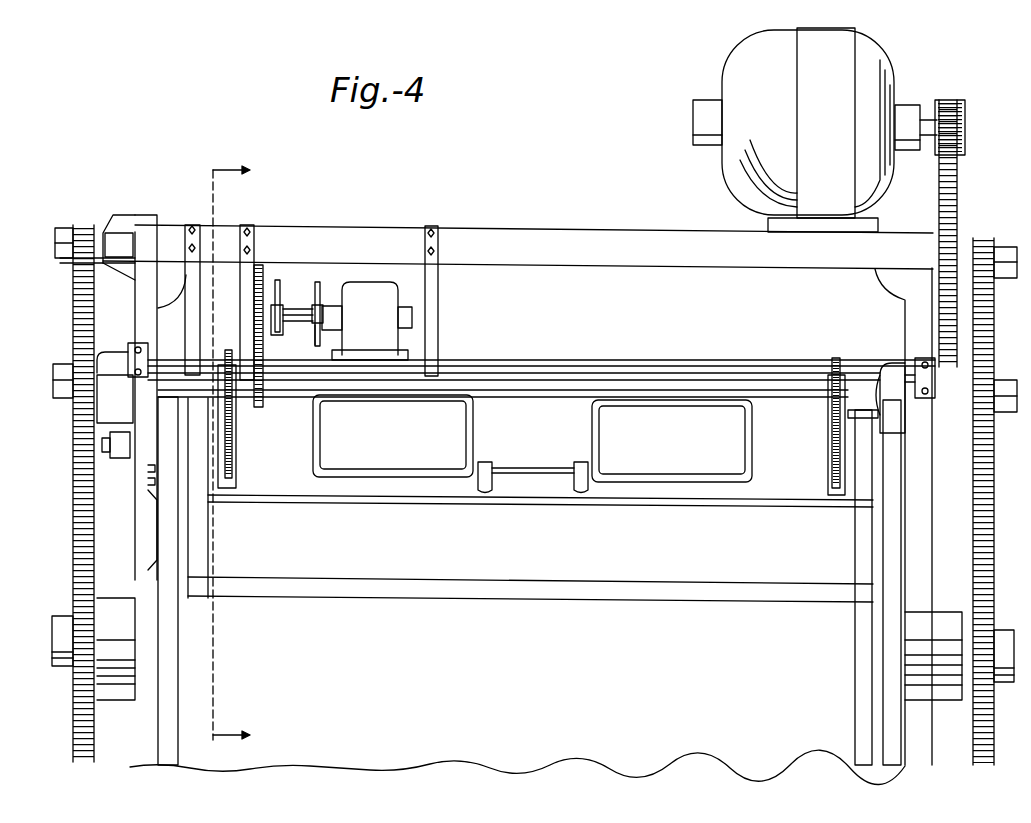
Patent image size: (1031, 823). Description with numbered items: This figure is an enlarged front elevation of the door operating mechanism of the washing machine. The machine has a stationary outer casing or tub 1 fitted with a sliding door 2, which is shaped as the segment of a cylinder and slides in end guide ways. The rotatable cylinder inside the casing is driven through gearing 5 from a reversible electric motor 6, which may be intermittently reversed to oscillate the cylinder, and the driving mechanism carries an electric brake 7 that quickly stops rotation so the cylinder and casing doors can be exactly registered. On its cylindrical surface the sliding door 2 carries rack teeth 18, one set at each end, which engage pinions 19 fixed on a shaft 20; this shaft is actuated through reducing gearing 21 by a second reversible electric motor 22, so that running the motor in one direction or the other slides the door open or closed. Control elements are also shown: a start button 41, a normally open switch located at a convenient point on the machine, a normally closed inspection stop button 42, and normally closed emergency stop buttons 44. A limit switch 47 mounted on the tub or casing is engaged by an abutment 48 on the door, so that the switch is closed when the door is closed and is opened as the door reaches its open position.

The stationary outer casing or tub 1 is at (852, 738).
The sliding door 2 is at (768, 425).
The gearing 5 is at (1015, 470).
The reversible electric motor 6 is at (762, 60).
The electric brake 7 is at (968, 118).
The rack teeth 18 is at (236, 440).
The pinions 19 is at (229, 350).
The shaft 20 is at (496, 372).
The reducing gearing 21 is at (290, 305).
The reversible electric motor 22 is at (352, 290).
The start button 41 is at (103, 400).
The inspection stop button 42 is at (905, 360).
The emergency stop buttons 44 is at (102, 442).
The limit switch 47 is at (880, 412).
The abutment 48 is at (853, 410).